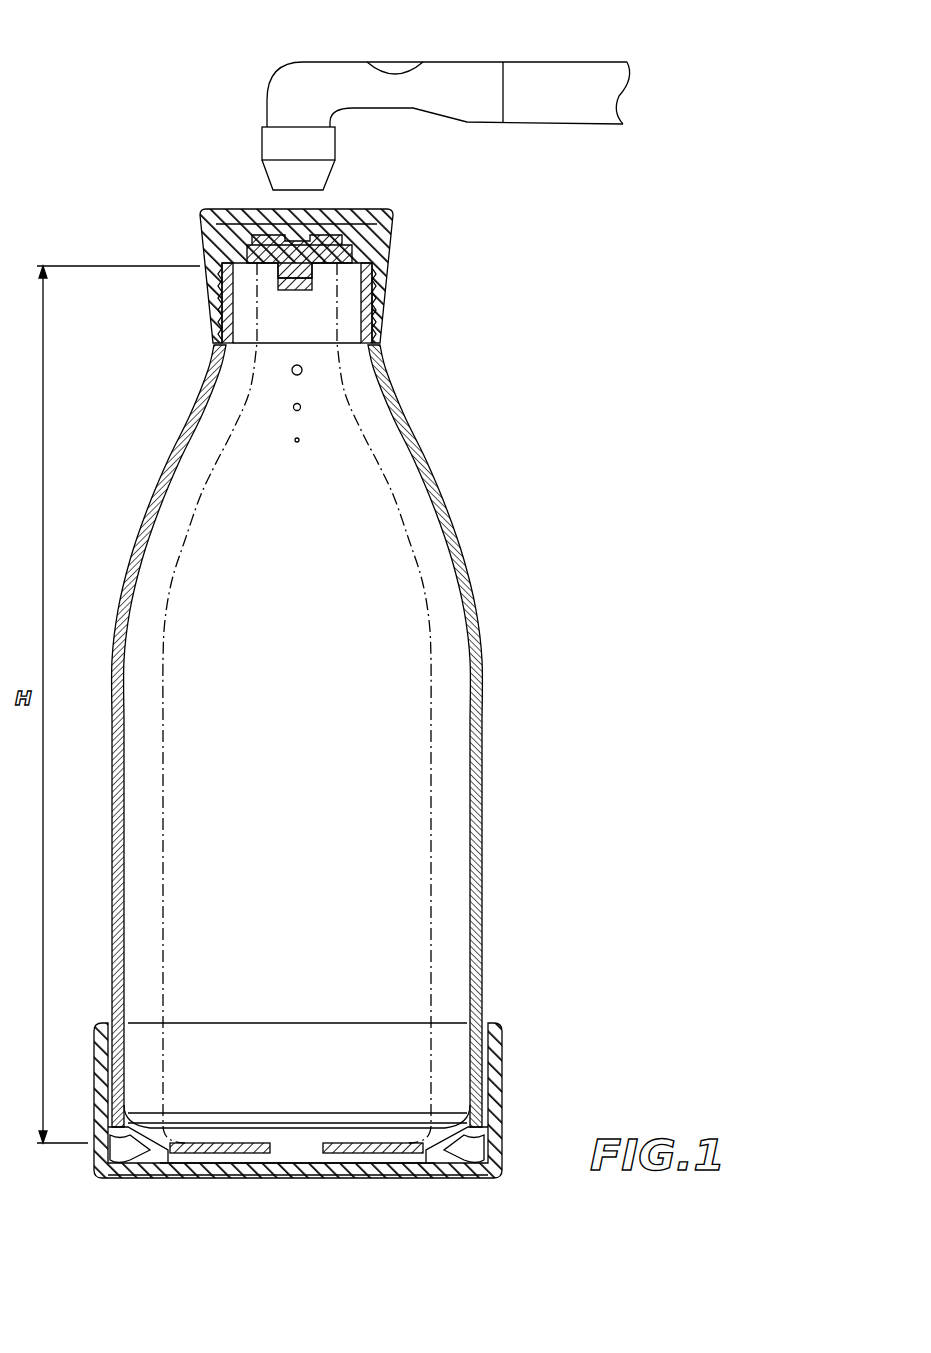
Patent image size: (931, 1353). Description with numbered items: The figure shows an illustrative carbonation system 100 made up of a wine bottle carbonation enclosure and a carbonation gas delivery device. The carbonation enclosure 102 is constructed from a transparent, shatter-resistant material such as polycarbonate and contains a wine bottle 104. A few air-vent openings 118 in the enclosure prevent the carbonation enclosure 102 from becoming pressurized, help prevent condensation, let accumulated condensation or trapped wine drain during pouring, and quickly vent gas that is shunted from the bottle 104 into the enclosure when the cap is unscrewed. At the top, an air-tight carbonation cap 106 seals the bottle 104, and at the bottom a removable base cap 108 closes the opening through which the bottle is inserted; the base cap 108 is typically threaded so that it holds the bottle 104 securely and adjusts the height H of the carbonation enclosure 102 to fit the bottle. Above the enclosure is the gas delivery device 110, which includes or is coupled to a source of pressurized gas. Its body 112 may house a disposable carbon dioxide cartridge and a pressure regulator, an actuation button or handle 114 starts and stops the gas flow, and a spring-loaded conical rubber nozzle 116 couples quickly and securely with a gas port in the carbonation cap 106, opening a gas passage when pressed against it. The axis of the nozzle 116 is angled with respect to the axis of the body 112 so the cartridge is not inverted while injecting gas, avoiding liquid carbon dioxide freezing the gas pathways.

The carbonation system 100 is at (382, 693).
The carbonation enclosure 102 is at (482, 660).
The wine bottle 104 is at (405, 517).
The carbonation cap 106 is at (393, 245).
The base cap 108 is at (502, 1103).
The gas delivery device 110 is at (440, 126).
The body 112 is at (547, 70).
The actuation button or handle 114 is at (397, 58).
The conical nozzle 116 is at (266, 143).
The air-vent openings 118 is at (300, 440).